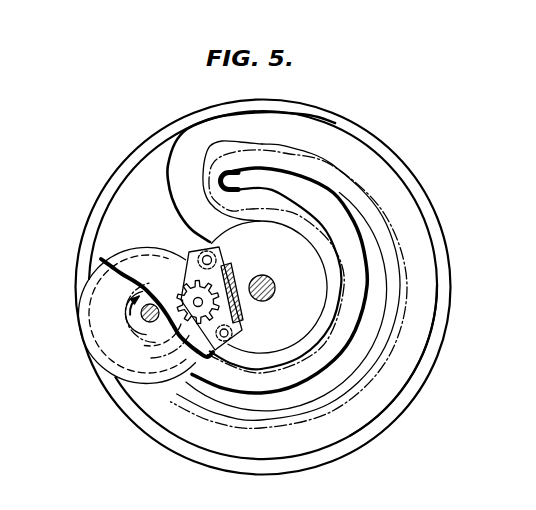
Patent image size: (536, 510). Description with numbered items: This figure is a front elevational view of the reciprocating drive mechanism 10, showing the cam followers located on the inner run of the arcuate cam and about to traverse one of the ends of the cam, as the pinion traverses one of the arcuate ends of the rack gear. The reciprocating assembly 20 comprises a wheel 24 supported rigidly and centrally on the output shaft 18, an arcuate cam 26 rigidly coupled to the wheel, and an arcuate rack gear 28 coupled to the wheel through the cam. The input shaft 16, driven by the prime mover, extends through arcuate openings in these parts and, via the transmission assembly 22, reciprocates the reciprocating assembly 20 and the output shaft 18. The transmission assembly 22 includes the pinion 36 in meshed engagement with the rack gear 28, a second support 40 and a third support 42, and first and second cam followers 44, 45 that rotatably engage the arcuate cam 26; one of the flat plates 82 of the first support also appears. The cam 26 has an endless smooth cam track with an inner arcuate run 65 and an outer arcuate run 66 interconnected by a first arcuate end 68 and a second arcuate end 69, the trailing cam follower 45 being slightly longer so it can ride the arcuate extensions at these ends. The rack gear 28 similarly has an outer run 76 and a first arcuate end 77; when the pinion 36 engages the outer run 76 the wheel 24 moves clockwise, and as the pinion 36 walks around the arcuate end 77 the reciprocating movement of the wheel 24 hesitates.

The reciprocating drive mechanism 10 is at (456, 158).
The input shaft 16 is at (143, 323).
The output shaft 18 is at (276, 284).
The reciprocating assembly 20 is at (441, 202).
The transmission assembly 22 is at (94, 241).
The wheel 24 is at (443, 227).
The arcuate cam 26 is at (166, 136).
The arcuate rack gear 28 is at (416, 303).
The pinion 36 is at (184, 283).
The second support 40 is at (217, 248).
The third support 42 is at (237, 278).
The first cam follower 44 is at (222, 258).
The second cam follower 45 is at (232, 334).
The inner arcuate run 65 is at (328, 323).
The outer arcuate run 66 is at (432, 342).
The first arcuate end 68 is at (168, 168).
The second arcuate end 69 is at (120, 252).
The outer run 76 is at (342, 165).
The first arcuate end 77 is at (205, 152).
The flat plate 82 is at (85, 347).